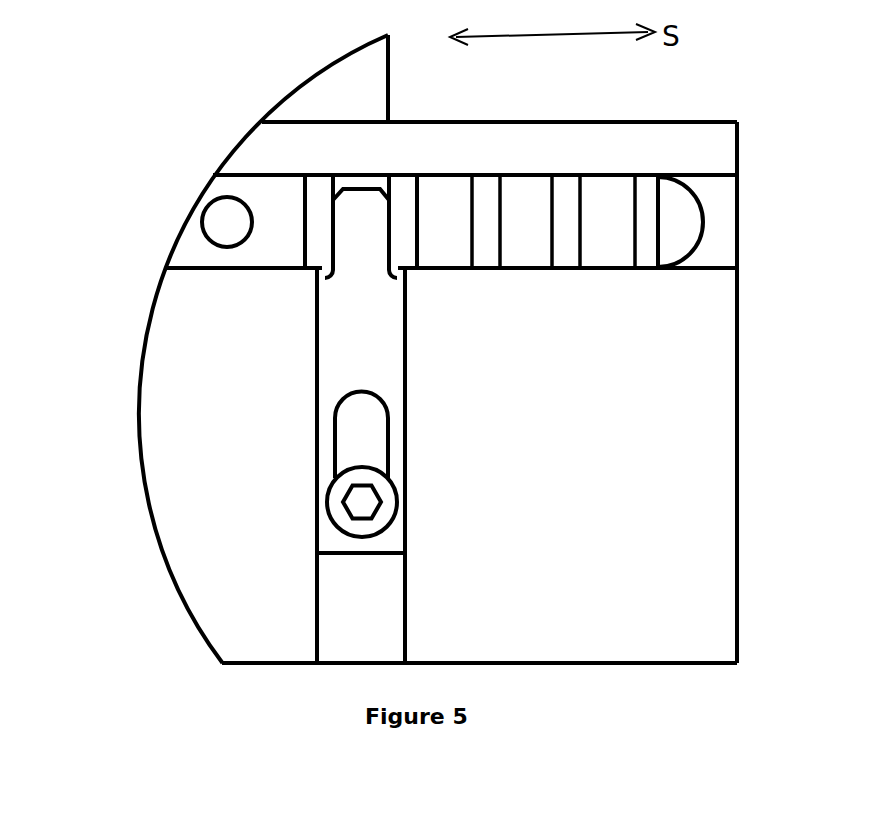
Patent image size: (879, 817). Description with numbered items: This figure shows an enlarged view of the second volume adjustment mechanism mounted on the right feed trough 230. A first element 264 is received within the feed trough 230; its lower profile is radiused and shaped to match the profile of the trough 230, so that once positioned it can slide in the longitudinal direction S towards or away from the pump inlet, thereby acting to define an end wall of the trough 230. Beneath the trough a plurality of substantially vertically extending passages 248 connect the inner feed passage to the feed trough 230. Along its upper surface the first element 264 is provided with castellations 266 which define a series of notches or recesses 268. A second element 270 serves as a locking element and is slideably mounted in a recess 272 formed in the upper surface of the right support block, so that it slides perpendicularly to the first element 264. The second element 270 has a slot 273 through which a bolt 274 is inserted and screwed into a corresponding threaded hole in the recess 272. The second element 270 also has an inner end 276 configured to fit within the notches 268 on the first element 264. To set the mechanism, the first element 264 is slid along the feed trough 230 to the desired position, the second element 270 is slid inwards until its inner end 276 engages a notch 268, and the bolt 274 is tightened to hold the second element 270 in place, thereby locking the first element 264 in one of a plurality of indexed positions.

The right feed trough 230 is at (197, 245).
The vertically extending passages 248 is at (222, 213).
The first element 264 is at (620, 168).
The castellations 266 is at (648, 229).
The notches or recesses 268 is at (522, 218).
The second element 270 is at (356, 328).
The recess 272 is at (347, 617).
The slot 273 is at (353, 442).
The bolt 274 is at (360, 503).
The inner end 276 is at (357, 228).